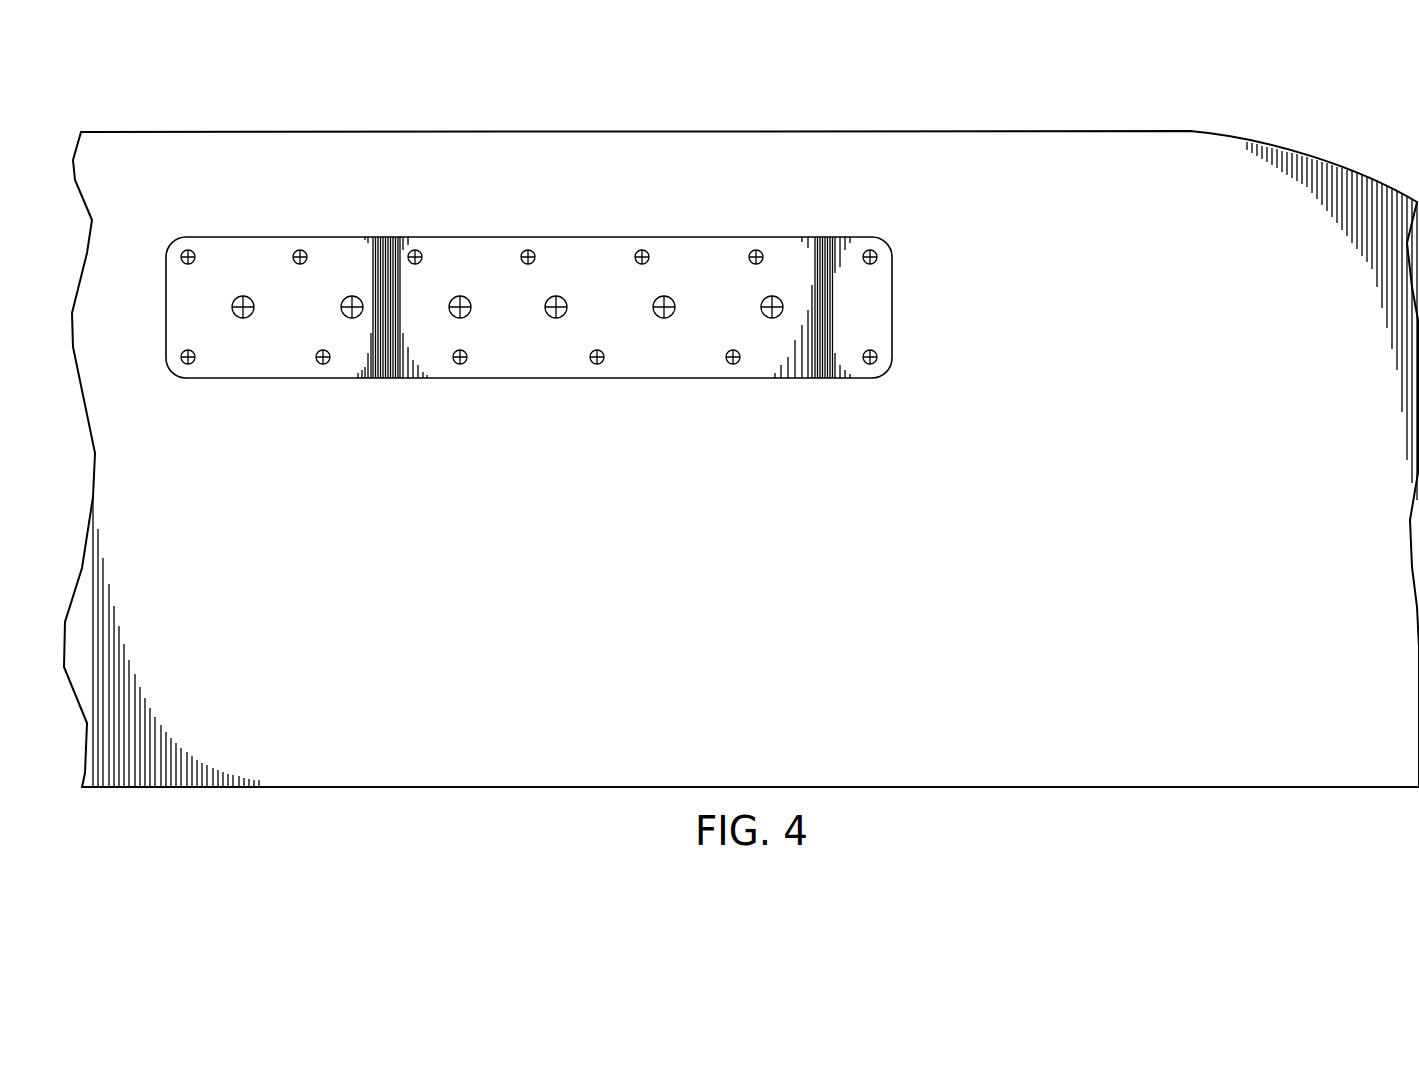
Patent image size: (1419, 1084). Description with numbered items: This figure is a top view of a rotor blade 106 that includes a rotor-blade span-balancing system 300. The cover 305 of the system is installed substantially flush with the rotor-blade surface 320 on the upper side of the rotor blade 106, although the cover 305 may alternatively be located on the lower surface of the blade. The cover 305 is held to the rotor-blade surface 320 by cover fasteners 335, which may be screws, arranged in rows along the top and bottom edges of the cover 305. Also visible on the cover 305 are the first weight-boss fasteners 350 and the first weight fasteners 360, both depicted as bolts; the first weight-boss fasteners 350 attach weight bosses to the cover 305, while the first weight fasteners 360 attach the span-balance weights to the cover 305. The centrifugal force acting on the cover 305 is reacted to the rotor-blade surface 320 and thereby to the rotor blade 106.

The rotor-blade span-balancing system 300 is at (378, 88).
The rotor blade 106 is at (185, 131).
The cover 305 is at (883, 306).
The rotor-blade surface 320 is at (1166, 387).
The cover fasteners 335 is at (875, 251).
The first weight-boss fasteners 350 is at (360, 298).
The first weight fasteners 360 is at (251, 298).